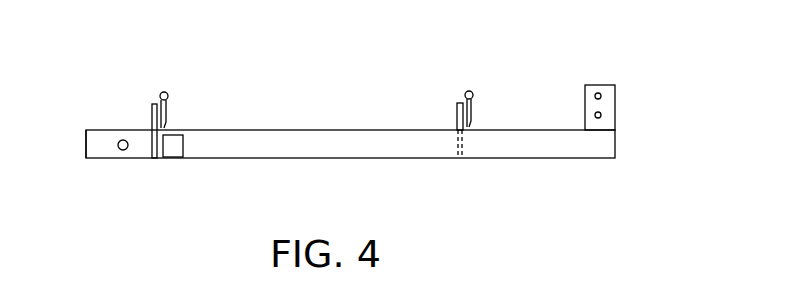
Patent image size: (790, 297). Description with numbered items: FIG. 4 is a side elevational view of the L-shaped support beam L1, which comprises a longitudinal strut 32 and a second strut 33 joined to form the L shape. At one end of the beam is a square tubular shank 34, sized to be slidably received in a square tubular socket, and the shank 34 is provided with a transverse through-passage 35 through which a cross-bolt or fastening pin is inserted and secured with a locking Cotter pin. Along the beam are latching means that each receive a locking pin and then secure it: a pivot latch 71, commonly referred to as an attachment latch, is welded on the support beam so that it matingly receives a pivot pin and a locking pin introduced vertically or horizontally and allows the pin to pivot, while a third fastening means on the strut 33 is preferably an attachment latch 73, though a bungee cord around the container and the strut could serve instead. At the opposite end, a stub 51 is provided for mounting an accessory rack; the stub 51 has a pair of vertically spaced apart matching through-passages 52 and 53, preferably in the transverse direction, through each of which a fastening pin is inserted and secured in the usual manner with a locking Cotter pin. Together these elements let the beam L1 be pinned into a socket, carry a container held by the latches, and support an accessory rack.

The strut 32 is at (518, 158).
The strut 33 is at (185, 147).
The shank 34 is at (107, 158).
The through-passage 35 is at (118, 140).
The stub 51 is at (622, 125).
The through-passage 52 is at (602, 96).
The through-passage 53 is at (595, 115).
The pivot latch 71 is at (457, 113).
The attachment latch 73 is at (152, 112).
The L-shaped support beam L1 is at (419, 180).